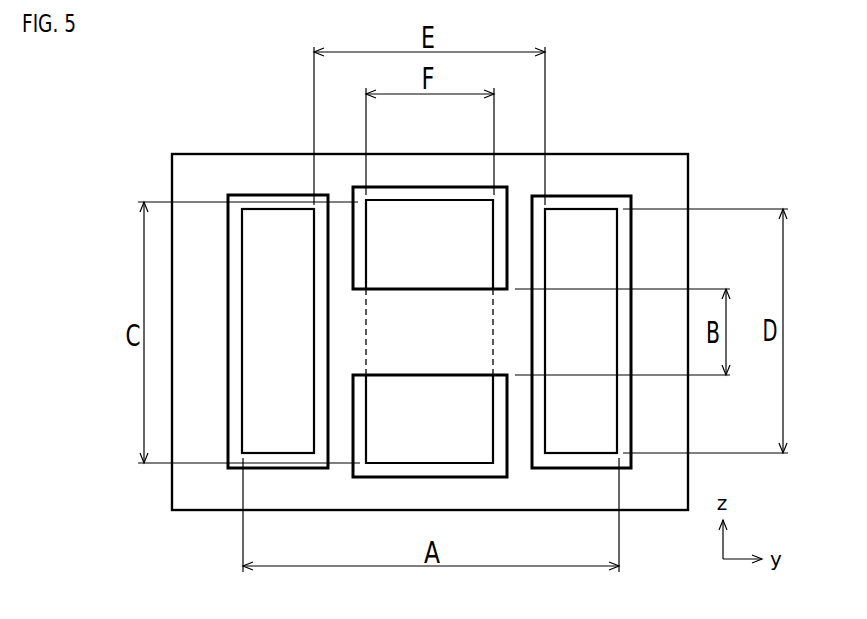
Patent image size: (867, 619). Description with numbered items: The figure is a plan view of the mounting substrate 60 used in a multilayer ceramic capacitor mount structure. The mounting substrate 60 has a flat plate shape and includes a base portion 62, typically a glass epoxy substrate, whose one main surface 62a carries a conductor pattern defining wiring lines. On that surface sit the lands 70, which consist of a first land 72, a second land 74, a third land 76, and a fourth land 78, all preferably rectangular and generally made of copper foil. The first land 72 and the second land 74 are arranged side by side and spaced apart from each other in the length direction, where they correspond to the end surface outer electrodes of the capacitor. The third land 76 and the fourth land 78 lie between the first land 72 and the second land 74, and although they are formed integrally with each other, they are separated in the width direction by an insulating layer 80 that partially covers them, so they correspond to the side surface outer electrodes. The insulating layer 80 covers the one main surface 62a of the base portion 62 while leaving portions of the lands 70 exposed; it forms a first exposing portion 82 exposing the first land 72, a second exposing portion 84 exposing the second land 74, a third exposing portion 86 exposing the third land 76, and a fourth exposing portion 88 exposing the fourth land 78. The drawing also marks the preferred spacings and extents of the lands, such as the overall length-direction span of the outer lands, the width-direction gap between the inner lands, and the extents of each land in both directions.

The mounting substrate 60 is at (146, 119).
The base portion 62 is at (209, 152).
The one main surface 62a is at (391, 192).
The lands 70 is at (70, 413).
The first land 72 is at (283, 228).
The second land 74 is at (572, 218).
The third land 76 is at (438, 213).
The fourth land 78 is at (395, 448).
The insulating layer 80 is at (663, 417).
The first exposing portion 82 is at (258, 193).
The second exposing portion 84 is at (606, 194).
The third exposing portion 86 is at (472, 192).
The fourth exposing portion 88 is at (482, 477).